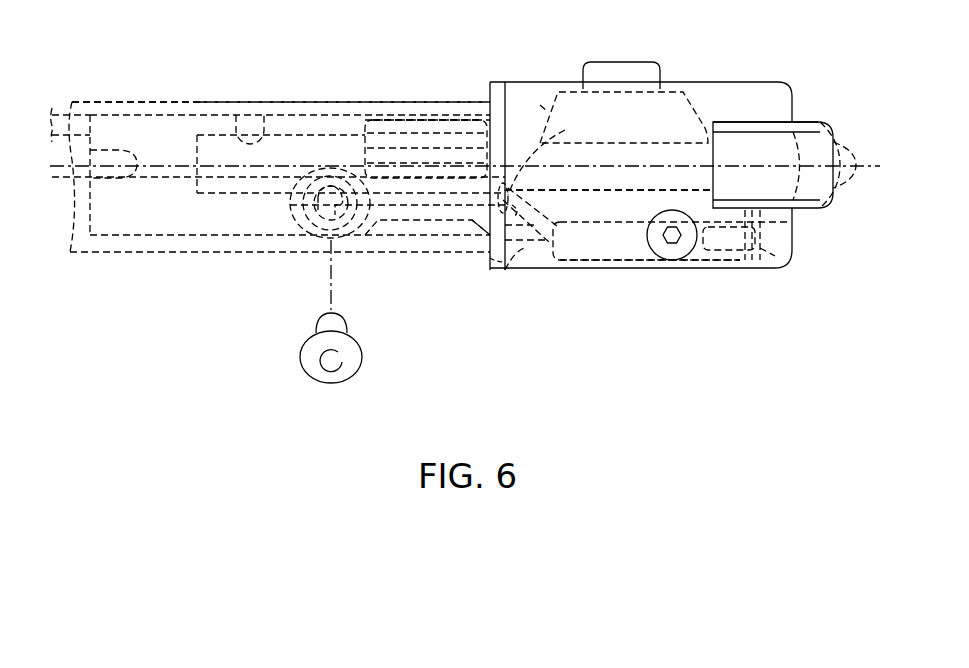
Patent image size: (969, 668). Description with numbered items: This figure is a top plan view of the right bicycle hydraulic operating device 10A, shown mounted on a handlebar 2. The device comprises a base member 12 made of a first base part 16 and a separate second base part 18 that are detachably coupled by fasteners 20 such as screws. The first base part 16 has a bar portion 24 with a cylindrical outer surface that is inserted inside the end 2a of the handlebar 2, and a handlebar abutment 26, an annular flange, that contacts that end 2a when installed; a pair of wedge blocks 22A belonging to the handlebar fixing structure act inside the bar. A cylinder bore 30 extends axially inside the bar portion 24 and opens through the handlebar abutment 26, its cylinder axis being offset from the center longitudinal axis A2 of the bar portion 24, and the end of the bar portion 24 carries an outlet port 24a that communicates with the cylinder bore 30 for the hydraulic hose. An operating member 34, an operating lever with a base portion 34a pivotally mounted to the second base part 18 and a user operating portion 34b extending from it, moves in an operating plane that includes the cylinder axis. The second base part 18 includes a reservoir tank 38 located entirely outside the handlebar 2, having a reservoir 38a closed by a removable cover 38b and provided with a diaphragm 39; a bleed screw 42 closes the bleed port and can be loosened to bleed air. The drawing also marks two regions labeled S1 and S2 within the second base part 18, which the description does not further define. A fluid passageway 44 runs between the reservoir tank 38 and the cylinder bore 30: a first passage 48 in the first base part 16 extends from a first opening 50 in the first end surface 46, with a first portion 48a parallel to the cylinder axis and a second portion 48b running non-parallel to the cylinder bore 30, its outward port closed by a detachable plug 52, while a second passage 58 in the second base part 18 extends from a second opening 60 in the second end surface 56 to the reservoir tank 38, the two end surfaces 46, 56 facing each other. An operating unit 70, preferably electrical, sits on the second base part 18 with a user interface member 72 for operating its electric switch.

The handlebar 2 is at (103, 256).
The bicycle hydraulic operating device 10A is at (165, 80).
The bar portion 24 is at (228, 250).
The outlet port 24a is at (158, 175).
The cylinder bore 30 is at (236, 118).
The center longitudinal axis A2 is at (262, 180).
The end of the handlebar 2a is at (333, 100).
The wedge blocks 22A is at (385, 120).
The first base part 16 is at (408, 112).
The base member 12 is at (483, 38).
The second base part 18 is at (518, 78).
The fasteners 20 is at (537, 108).
The user interface member 72 is at (636, 62).
The operating unit 70 is at (702, 102).
The first space S1 is at (660, 162).
The second space S2 is at (660, 204).
The second opening 60 is at (540, 158).
The second end surface 56 is at (530, 150).
The fluid passageway 44 is at (532, 195).
The second passage 58 is at (548, 218).
The first end surface 46 is at (505, 258).
The handlebar abutment 26 is at (492, 262).
The reservoir tank 38 is at (682, 272).
The reservoir 38a is at (612, 262).
The cover 38b is at (776, 258).
The diaphragm 39 is at (715, 262).
The bleed screw 42 is at (688, 202).
The operating member 34 is at (808, 214).
The base portion 34a is at (812, 120).
The user operating portion 34b is at (840, 188).
The first passage 48 is at (432, 290).
The second portion 48b is at (347, 235).
The first portion 48a is at (404, 222).
The first opening 50 is at (470, 238).
The plug 52 is at (300, 363).